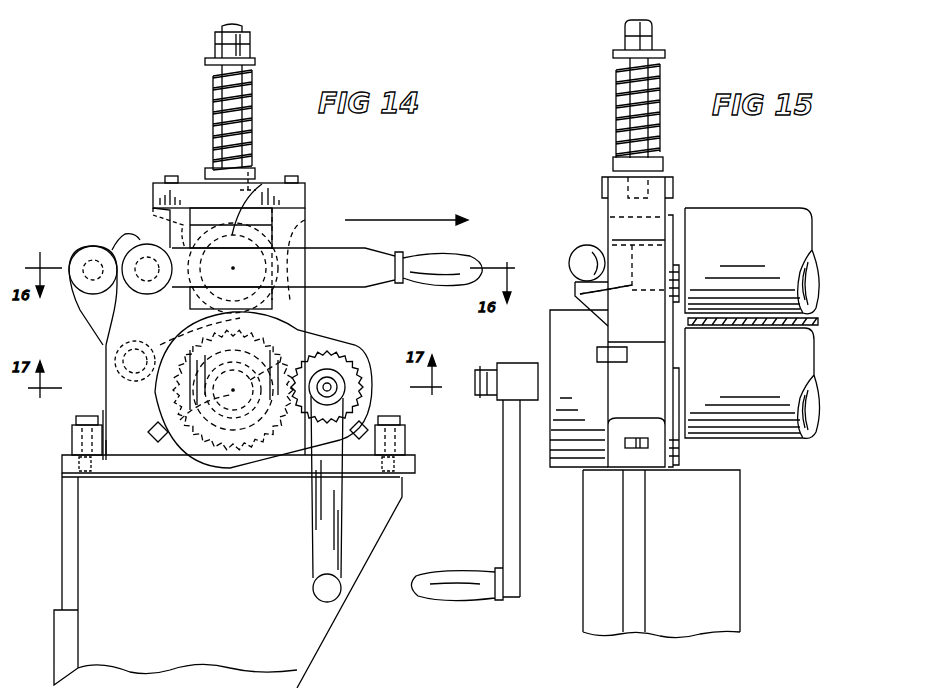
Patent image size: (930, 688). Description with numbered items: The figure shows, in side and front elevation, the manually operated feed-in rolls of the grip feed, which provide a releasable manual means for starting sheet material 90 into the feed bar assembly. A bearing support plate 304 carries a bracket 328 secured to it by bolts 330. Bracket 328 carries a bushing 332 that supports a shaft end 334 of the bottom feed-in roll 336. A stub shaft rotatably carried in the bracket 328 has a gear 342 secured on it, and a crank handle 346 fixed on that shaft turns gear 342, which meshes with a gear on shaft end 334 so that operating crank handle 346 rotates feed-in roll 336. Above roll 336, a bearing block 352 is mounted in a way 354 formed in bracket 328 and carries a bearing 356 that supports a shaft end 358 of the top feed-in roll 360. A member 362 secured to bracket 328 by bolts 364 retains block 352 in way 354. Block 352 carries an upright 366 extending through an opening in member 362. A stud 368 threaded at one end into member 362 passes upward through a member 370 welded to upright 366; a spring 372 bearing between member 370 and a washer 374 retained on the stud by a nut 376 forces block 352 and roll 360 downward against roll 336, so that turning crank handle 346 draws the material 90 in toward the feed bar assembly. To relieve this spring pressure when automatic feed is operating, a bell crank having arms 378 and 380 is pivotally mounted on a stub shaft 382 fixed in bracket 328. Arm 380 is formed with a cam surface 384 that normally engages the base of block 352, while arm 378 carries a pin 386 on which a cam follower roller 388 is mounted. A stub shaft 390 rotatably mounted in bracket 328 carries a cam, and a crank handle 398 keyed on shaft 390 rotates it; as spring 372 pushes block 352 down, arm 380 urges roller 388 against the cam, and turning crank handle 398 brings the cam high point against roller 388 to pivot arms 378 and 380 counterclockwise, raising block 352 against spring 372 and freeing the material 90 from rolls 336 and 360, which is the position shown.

In FIG. 14, the nut 376 is at (252, 44).
In FIG. 15, the nut 376 is at (660, 38).
In FIG. 14, the washer 374 is at (254, 64).
In FIG. 15, the washer 374 is at (664, 58).
In FIG. 14, the spring 372 is at (252, 90).
In FIG. 15, the spring 372 is at (660, 92).
In FIG. 14, the stud 368 is at (252, 116).
In FIG. 15, the stud 368 is at (658, 136).
In FIG. 14, the member 370 is at (210, 170).
In FIG. 15, the member 370 is at (670, 164).
In FIG. 14, the bolt 364 is at (172, 177).
In FIG. 14, the upright 366 is at (255, 170).
In FIG. 14, the way 354 is at (272, 188).
In FIG. 14, the member 362 is at (305, 195).
In FIG. 14, the bearing 356 is at (153, 205).
In FIG. 14, the bearing block 352 is at (272, 242).
In FIG. 14, the cam surface 384 is at (288, 272).
In FIG. 14, the crank handle 398 is at (366, 264).
In FIG. 15, the crank handle 398 is at (578, 246).
In FIG. 14, the cam follower roller 388 is at (78, 258).
In FIG. 14, the pin 386 is at (93, 258).
In FIG. 14, the stub shaft 390 is at (147, 245).
In FIG. 14, the bell crank arm 378 is at (96, 300).
In FIG. 14, the stub shaft 382 is at (112, 366).
In FIG. 14, the bell crank arm 380 is at (300, 320).
In FIG. 14, the shaft end 334 is at (205, 440).
In FIG. 14, the bushing 332 is at (235, 445).
In FIG. 14, the gear 342 is at (345, 365).
In FIG. 14, the crank handle 346 is at (318, 566).
In FIG. 15, the crank handle 346 is at (520, 548).
In FIG. 14, the bolt 330 is at (68, 426).
In FIG. 15, the bolt 330 is at (655, 446).
In FIG. 14, the bracket 328 is at (103, 410).
In FIG. 15, the bracket 328 is at (650, 385).
In FIG. 14, the bearing support plate 304 is at (306, 648).
In FIG. 15, the top feed-in roll 360 is at (778, 206).
In FIG. 15, the material 90 is at (760, 326).
In FIG. 15, the bottom feed-in roll 336 is at (778, 440).
In FIG. 15, the shaft end 358 is at (550, 333).